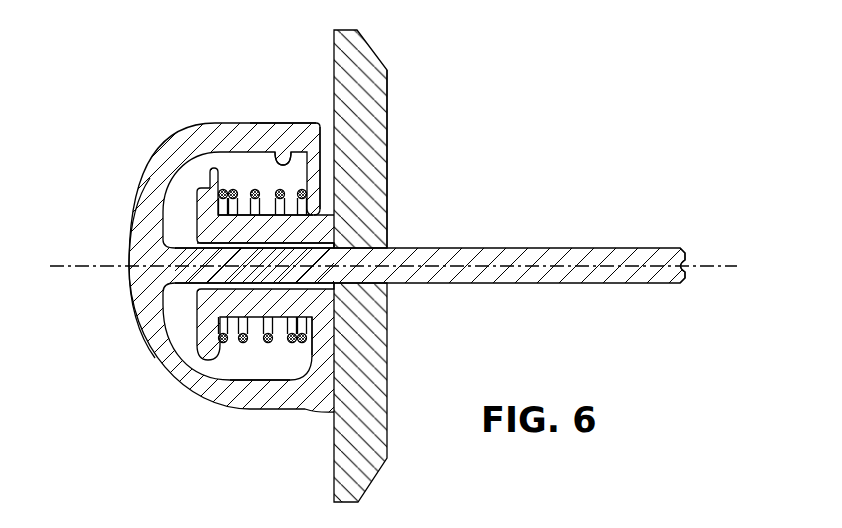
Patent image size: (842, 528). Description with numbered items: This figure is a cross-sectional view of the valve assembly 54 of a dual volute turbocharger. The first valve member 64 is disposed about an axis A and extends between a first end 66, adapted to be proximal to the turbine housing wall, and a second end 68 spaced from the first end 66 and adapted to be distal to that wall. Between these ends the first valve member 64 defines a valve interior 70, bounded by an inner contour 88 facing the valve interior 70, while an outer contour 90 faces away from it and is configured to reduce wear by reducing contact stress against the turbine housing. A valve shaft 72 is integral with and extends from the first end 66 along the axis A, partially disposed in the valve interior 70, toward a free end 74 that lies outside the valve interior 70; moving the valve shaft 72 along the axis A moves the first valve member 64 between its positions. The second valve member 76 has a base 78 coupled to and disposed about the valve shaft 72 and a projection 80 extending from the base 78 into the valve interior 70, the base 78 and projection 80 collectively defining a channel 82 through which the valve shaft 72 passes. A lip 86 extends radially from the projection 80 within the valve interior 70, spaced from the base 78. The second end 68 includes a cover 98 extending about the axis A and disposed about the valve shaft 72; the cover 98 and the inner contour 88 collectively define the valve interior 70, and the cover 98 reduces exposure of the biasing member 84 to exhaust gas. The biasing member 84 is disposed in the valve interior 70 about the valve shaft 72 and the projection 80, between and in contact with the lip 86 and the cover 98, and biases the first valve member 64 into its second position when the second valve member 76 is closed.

The valve assembly 54 is at (107, 74).
The first valve member 64 is at (150, 183).
The first end 66 is at (128, 279).
The second end 68 is at (323, 366).
The valve interior 70 is at (230, 370).
The valve shaft 72 is at (471, 277).
The free end 74 is at (680, 278).
The second valve member 76 is at (388, 127).
The base 78 is at (355, 73).
The projection 80 is at (270, 230).
The channel 82 is at (396, 246).
The biasing member 84 is at (268, 344).
The lip 86 is at (213, 178).
The inner contour 88 is at (286, 158).
The outer contour 90 is at (128, 230).
The cover 98 is at (316, 177).
The axis A is at (716, 265).